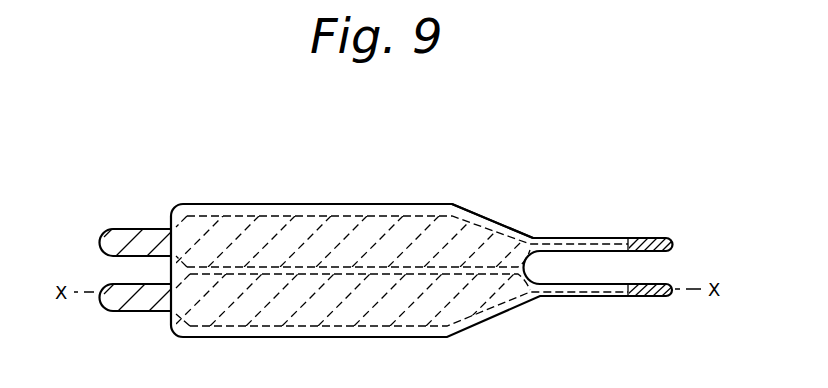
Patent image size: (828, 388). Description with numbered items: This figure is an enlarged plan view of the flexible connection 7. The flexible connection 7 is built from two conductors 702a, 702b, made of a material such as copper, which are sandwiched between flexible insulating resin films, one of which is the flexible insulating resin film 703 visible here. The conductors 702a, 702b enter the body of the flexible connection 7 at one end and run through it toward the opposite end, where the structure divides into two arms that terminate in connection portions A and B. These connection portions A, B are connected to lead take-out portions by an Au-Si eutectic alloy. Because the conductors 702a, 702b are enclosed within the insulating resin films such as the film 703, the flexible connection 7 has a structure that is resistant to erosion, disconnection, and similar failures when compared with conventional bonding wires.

The flexible connection 7 is at (430, 181).
The flexible insulating resin film 703 is at (488, 210).
The conductor 702a is at (132, 312).
The conductor 702b is at (130, 229).
The connection portion A is at (668, 278).
The connection portion B is at (670, 230).